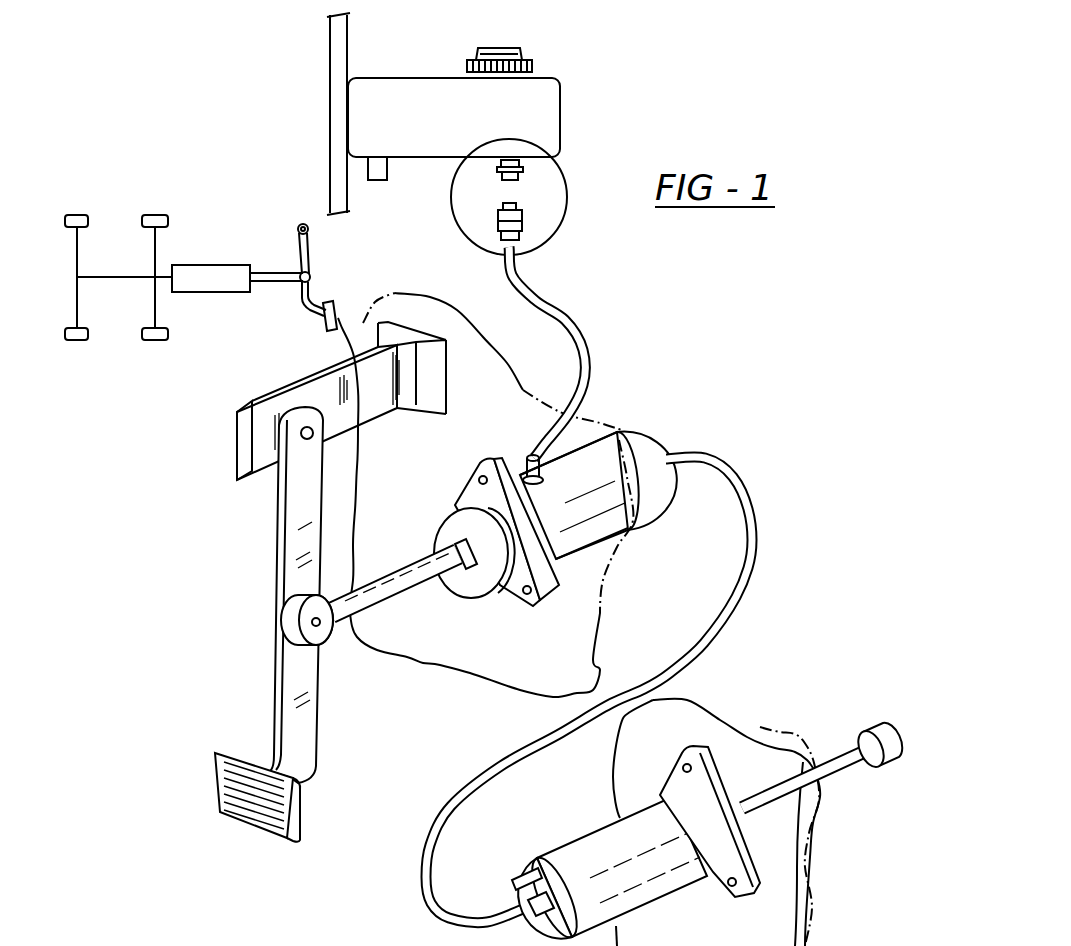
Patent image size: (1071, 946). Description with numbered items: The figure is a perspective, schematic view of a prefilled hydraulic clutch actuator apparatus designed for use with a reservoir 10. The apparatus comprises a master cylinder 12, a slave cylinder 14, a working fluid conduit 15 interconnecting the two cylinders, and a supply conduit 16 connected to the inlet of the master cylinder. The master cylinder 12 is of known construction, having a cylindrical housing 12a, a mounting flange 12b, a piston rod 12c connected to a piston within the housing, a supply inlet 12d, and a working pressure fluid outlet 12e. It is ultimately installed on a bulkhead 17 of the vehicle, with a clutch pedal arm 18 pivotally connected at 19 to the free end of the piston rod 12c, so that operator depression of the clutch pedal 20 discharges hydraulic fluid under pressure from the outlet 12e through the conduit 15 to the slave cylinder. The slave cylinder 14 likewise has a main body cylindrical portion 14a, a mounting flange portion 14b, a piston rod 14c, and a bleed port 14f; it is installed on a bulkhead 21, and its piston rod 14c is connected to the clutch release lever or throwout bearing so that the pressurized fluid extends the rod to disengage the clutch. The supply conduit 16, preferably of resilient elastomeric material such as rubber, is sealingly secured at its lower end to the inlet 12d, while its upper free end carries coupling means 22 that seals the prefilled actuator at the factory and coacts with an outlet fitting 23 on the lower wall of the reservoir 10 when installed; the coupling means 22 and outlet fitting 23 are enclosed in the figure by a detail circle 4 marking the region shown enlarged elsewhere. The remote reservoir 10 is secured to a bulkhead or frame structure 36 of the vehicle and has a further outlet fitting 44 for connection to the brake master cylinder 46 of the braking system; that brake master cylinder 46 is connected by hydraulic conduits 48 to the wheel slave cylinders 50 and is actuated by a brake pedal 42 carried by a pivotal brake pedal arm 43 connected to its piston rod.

The enlarged detail circle 4 is at (568, 190).
The reservoir 10 is at (373, 76).
The master cylinder 12 is at (559, 489).
The cylindrical housing 12a is at (633, 427).
The mounting flange 12b is at (557, 567).
The piston rod 12c is at (383, 580).
The supply inlet 12d is at (545, 468).
The working pressure fluid outlet 12e is at (660, 428).
The slave cylinder 14 is at (694, 811).
The main body cylindrical portion 14a is at (587, 840).
The mounting flange portion 14b is at (710, 750).
The piston rod 14c is at (833, 733).
The bleed port 14f is at (523, 867).
The working fluid conduit 15 is at (500, 767).
The supply conduit 16 is at (580, 320).
The bulkhead 17 is at (627, 630).
The clutch pedal arm 18 is at (280, 520).
The pivotal connection 19 is at (330, 640).
The clutch pedal 20 is at (216, 786).
The bulkhead 21 is at (810, 913).
The coupling means 22 is at (490, 232).
The outlet fitting 23 is at (480, 174).
The bulkhead or frame structure 36 is at (330, 67).
The brake pedal 42 is at (347, 320).
The brake pedal arm 43 is at (307, 306).
The further outlet fitting 44 is at (368, 170).
The brake master cylinder 46 is at (210, 264).
The hydraulic conduits 48 is at (113, 276).
The wheel slave cylinders 50 is at (80, 212).